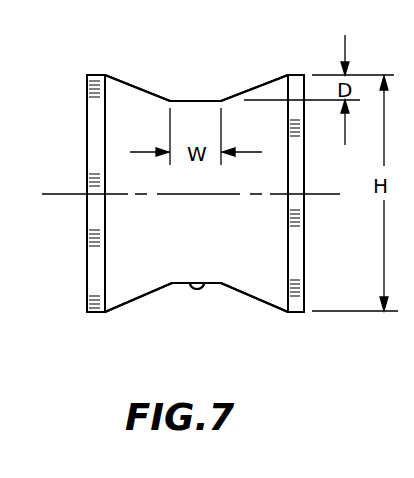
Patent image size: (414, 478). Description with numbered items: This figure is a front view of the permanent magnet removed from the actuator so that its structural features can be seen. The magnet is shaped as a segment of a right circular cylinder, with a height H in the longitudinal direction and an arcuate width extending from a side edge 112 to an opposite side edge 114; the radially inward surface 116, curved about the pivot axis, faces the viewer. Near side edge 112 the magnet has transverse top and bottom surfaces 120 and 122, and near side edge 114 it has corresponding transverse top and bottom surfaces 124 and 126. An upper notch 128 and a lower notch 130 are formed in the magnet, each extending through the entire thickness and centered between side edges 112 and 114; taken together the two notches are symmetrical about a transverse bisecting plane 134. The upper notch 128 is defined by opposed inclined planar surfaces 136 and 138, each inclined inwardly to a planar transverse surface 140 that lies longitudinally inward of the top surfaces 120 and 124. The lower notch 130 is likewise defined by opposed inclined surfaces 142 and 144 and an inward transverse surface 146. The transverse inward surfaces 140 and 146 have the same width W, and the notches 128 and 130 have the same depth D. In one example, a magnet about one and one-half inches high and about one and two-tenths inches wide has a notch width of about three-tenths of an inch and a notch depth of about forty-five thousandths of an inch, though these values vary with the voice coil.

The side edge 112 is at (88, 152).
The opposite side edge 114 is at (297, 254).
The radially inward surface 116 is at (213, 245).
The transverse top surface 120 is at (97, 73).
The transverse bottom surface 122 is at (97, 313).
The transverse top surface 124 is at (314, 62).
The transverse bottom surface 126 is at (292, 314).
The upper notch 128 is at (209, 93).
The lower notch 130 is at (210, 295).
The transverse bisecting plane 134 is at (58, 194).
The inclined planar surface 136 is at (137, 84).
The inclined planar surface 138 is at (254, 86).
The transverse surface 140 is at (190, 100).
The inclined surface 142 is at (147, 296).
The inclined surface 144 is at (257, 303).
The inward transverse surface 146 is at (200, 286).